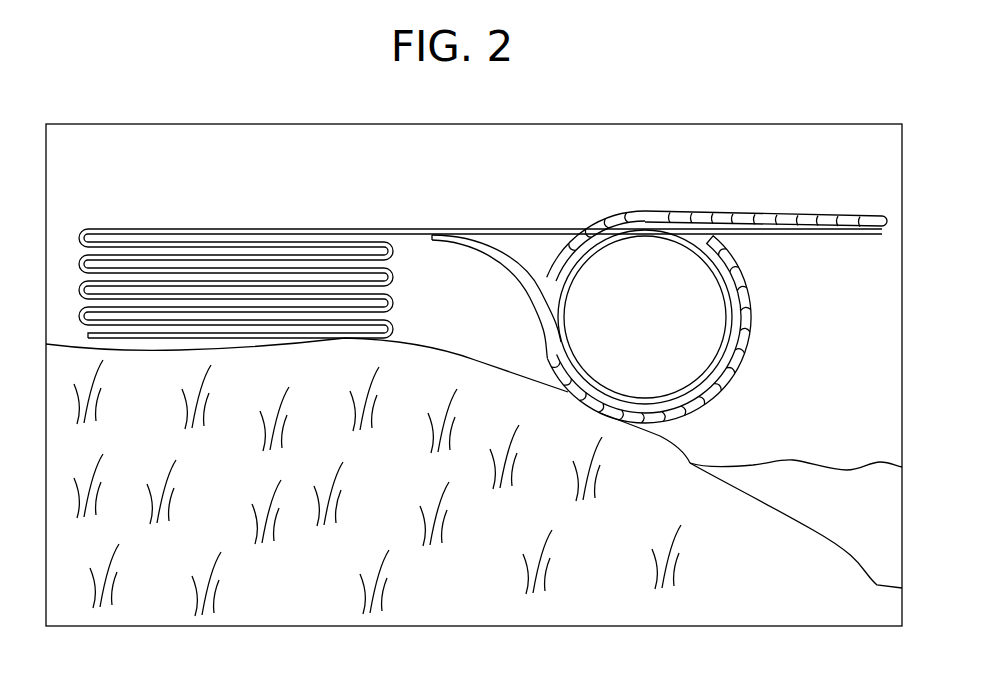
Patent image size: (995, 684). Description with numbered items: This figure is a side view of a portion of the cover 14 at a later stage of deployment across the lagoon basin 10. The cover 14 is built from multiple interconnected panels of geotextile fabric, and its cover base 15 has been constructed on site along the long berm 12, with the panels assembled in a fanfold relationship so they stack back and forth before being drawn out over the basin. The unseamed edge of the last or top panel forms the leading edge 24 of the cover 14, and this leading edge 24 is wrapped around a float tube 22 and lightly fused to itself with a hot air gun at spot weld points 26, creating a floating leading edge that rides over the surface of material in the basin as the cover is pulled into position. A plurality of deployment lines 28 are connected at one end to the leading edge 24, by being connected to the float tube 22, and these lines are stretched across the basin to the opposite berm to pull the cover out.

The lagoon basin 10 is at (803, 492).
The berm 12 is at (302, 381).
The cover 14 is at (133, 212).
The cover base 15 is at (193, 228).
The float tube 22 is at (588, 260).
The leading edge 24 is at (557, 228).
The spot weld points 26 is at (453, 247).
The deployment lines 28 is at (760, 215).